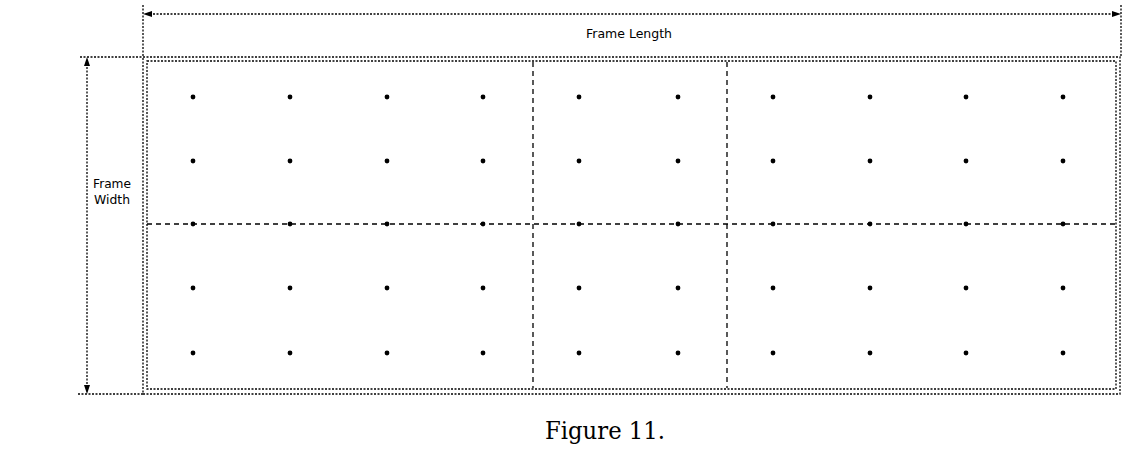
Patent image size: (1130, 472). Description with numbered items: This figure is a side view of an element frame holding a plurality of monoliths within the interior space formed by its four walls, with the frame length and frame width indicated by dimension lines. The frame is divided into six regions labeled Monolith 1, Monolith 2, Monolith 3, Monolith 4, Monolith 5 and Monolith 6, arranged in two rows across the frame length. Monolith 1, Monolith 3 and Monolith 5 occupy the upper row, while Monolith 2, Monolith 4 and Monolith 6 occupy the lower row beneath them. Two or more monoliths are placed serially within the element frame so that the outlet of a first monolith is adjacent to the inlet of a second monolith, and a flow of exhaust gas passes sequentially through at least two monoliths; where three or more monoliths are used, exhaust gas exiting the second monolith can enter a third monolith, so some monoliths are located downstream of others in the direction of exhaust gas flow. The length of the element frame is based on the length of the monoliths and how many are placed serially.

The Monolith 1 is at (338, 161).
The Monolith 2 is at (338, 321).
The Monolith 3 is at (629, 161).
The Monolith 4 is at (629, 321).
The Monolith 5 is at (918, 161).
The Monolith 6 is at (918, 321).